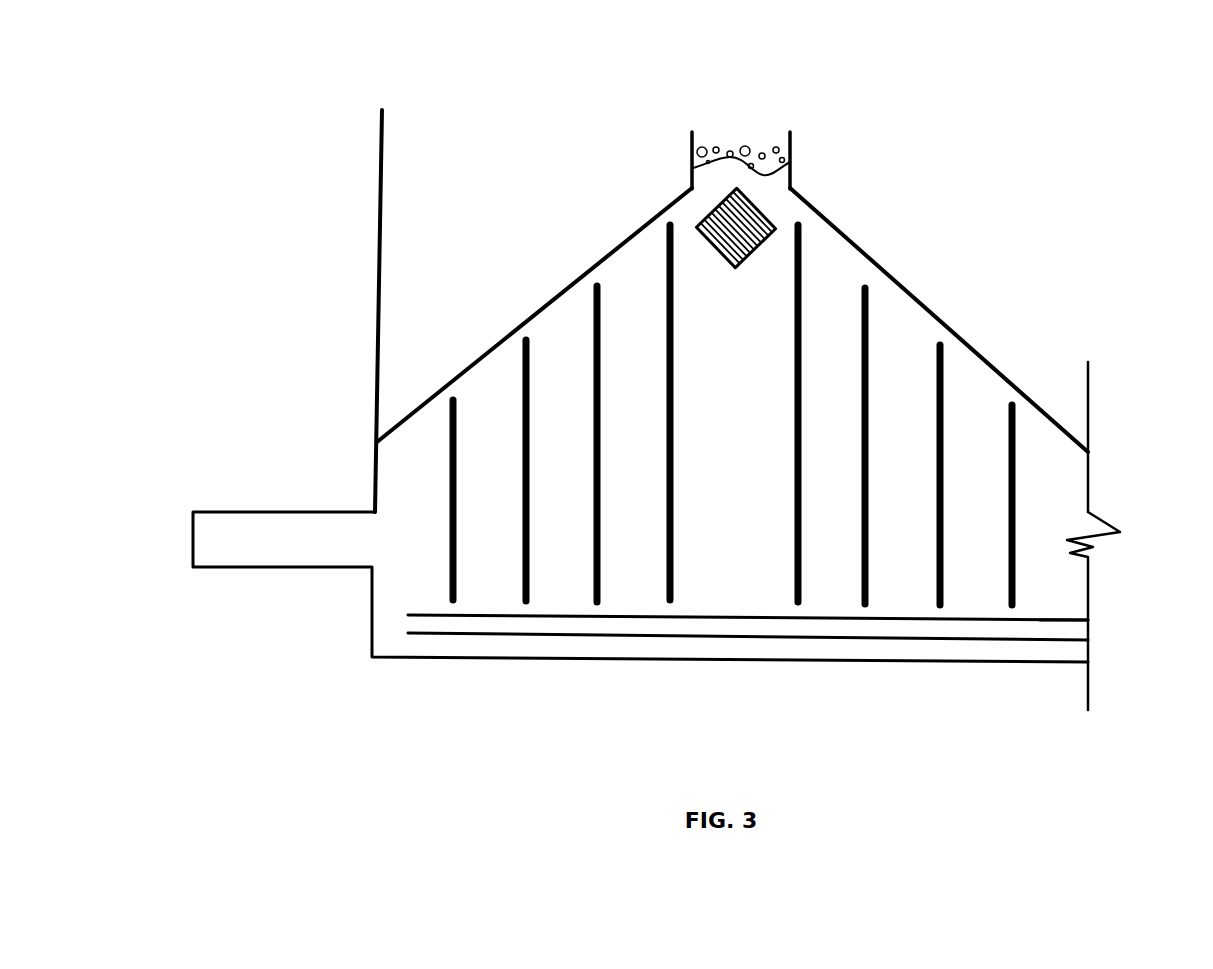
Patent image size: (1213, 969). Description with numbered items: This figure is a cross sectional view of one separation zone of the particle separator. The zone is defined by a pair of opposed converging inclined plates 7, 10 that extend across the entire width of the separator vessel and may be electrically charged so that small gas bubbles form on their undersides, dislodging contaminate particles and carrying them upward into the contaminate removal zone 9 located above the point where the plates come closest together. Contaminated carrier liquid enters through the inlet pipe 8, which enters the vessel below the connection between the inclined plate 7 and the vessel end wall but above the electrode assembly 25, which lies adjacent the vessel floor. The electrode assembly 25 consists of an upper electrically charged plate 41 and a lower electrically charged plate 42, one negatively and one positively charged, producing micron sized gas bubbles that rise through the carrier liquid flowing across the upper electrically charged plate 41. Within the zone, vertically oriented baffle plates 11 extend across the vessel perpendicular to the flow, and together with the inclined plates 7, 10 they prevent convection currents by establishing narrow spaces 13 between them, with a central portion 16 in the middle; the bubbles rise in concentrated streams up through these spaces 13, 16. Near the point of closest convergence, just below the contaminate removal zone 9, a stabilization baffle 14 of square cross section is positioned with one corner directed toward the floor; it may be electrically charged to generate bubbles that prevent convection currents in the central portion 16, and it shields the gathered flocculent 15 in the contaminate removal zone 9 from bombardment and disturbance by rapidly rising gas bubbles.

The inclined plate 7 is at (543, 307).
The inlet pipe 8 is at (277, 533).
The contaminate removal zone 9 is at (727, 112).
The inclined plate 10 is at (945, 323).
The baffle plates 11 is at (452, 415).
The spaces 13 is at (488, 575).
The stabilization baffle 14 is at (757, 207).
The gathered flocculent 15 is at (767, 147).
The central portion 16 is at (732, 535).
The electrode assembly 25 is at (1070, 632).
The upper electrically charged plate 41 is at (408, 616).
The lower electrically charged plate 42 is at (425, 635).